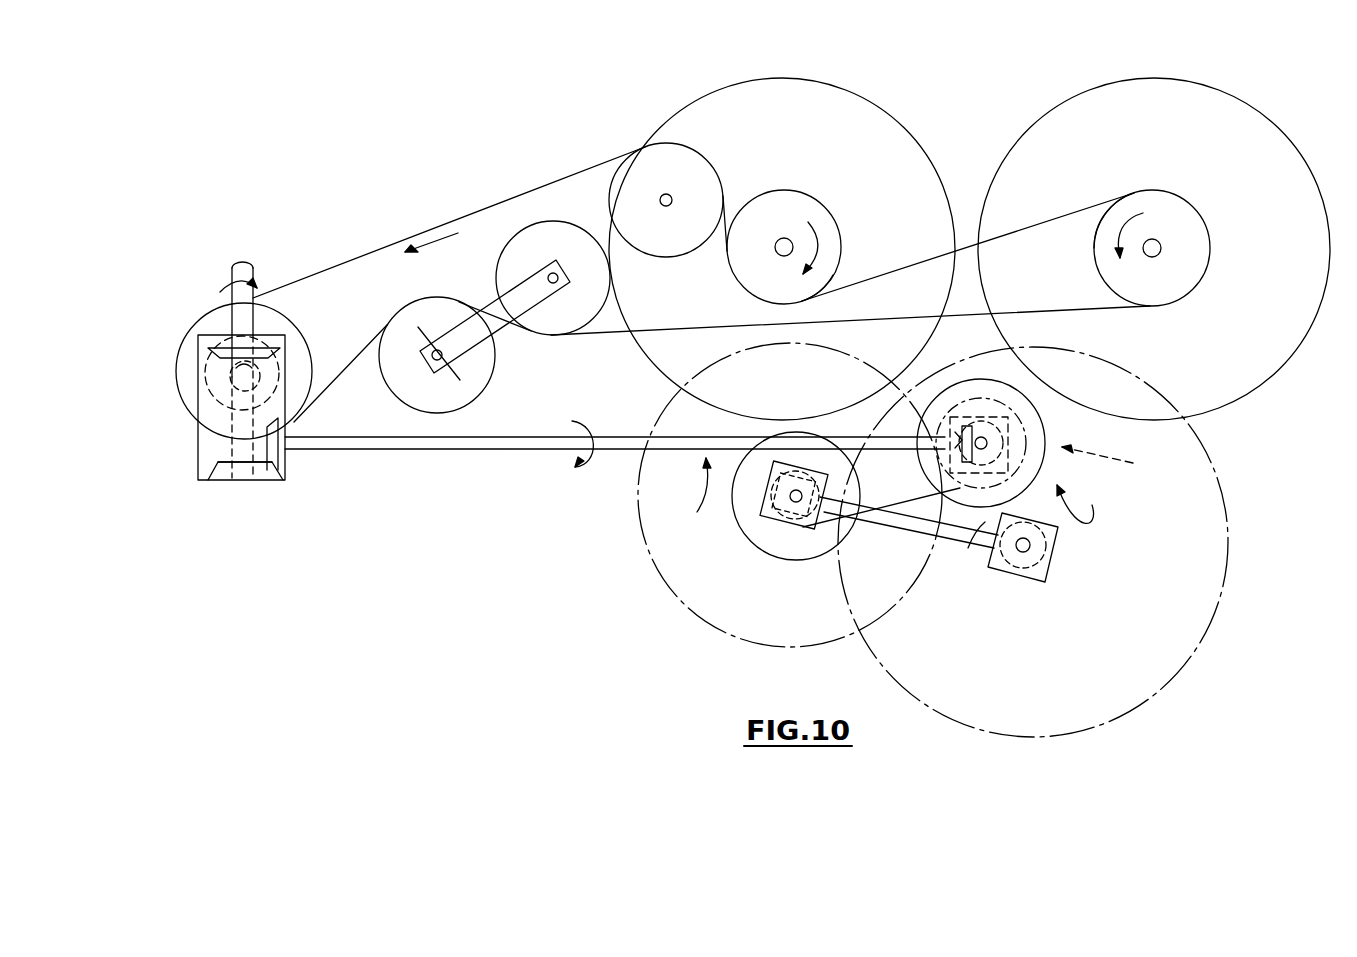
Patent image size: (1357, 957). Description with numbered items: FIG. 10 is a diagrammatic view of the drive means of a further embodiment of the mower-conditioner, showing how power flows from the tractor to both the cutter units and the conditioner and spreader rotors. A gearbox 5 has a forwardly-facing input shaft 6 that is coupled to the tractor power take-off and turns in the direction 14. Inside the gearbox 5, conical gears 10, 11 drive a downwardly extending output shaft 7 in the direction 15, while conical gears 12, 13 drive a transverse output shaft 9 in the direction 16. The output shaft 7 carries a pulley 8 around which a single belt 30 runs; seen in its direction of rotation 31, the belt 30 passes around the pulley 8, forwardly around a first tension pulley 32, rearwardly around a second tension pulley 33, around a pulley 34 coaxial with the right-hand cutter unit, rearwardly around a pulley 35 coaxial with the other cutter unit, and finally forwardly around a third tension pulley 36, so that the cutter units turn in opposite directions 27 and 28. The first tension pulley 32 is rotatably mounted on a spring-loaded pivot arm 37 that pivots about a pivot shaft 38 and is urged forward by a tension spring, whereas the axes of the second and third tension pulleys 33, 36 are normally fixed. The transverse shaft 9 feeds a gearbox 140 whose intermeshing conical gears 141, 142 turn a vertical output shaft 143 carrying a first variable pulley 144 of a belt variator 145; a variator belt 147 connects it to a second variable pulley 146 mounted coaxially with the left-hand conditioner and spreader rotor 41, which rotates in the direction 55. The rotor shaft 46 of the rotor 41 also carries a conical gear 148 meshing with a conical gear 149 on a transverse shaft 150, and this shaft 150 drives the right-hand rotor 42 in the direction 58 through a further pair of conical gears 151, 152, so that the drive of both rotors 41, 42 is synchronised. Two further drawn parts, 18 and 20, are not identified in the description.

The gearbox 5 is at (255, 482).
The input shaft 6 is at (232, 270).
The output shaft 7 is at (235, 395).
The pulley 8 is at (200, 455).
The transverse output shaft 9 is at (450, 451).
The conical gear 10 is at (262, 345).
The conical gear 11 is at (270, 368).
The conical gear 12 is at (266, 482).
The conical gear 13 is at (278, 478).
The direction of movement 14 is at (258, 285).
The direction of rotation 15 is at (282, 455).
The direction of rotation 16 is at (580, 466).
The roll 18 is at (912, 134).
The pulley 20 is at (788, 243).
The direction of rotation 27 is at (822, 245).
The direction of rotation 28 is at (1133, 208).
The belt 30 is at (470, 215).
The direction of rotation 31 is at (452, 240).
The first tension pulley 32 is at (493, 370).
The second tension pulley 33 is at (598, 320).
The pulley 34 is at (1094, 250).
The pulley 35 is at (838, 275).
The third tension pulley 36 is at (683, 255).
The spring-loaded pivot arm 37 is at (493, 305).
The pivot shaft 38 is at (566, 266).
The rotary conditioner and spreader unit 41 is at (745, 637).
The rotary conditioner and spreader unit 42 is at (1222, 580).
The rotary shaft 46 is at (763, 515).
The direction of rotation 55 is at (698, 482).
The direction of rotation 58 is at (1093, 505).
The gearbox 140 is at (975, 420).
The conical gear 141 is at (995, 412).
The conical gear 142 is at (858, 435).
The vertical output shaft 143 is at (925, 440).
The first variable pulley 144 is at (1010, 425).
The belt variator 145 is at (1124, 461).
The second variable pulley 146 is at (838, 548).
The variator belt 147 is at (918, 522).
The conical gear 148 is at (778, 530).
The conical gear 149 is at (816, 530).
The transverse shaft 150 is at (968, 548).
The conical gear 151 is at (1020, 584).
The conical gear 152 is at (1045, 566).